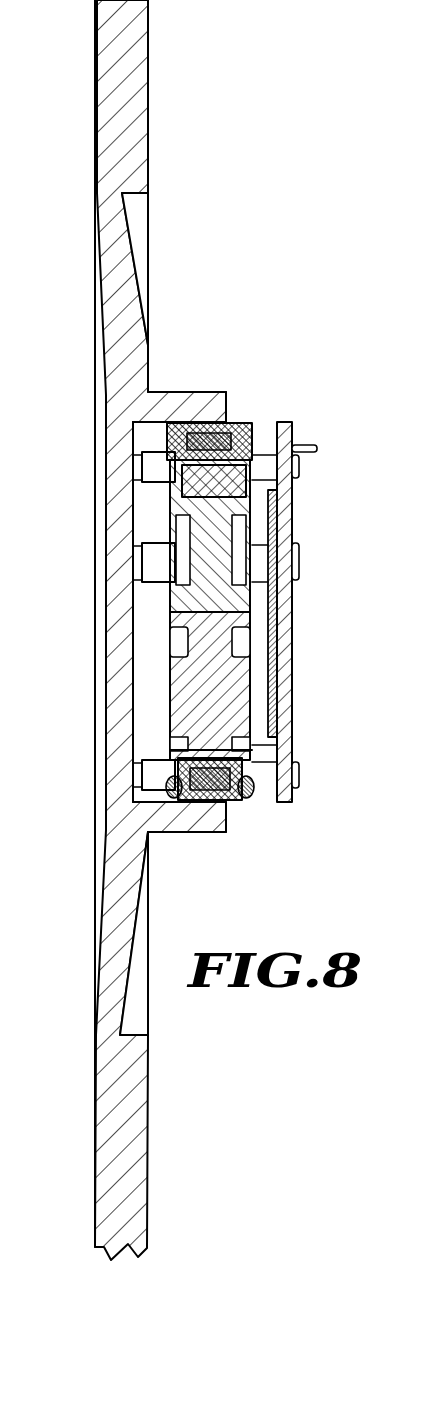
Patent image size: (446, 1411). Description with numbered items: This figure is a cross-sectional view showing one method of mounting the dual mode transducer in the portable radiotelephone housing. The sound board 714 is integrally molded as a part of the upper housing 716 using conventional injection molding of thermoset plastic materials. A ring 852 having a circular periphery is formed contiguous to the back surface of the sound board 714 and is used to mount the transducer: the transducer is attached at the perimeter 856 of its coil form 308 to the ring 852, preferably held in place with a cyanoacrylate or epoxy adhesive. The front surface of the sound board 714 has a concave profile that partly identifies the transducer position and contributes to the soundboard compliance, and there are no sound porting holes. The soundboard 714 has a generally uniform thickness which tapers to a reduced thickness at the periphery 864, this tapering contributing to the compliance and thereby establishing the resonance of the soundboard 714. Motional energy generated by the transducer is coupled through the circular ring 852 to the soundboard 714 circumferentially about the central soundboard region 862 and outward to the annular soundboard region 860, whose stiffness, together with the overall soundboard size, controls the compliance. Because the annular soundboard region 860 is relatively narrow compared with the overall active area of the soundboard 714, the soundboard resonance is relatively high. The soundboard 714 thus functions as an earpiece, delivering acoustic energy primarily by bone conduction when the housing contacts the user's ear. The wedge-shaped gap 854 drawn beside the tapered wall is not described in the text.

The sound board 714 is at (104, 698).
The upper housing 716 is at (95, 60).
The periphery 864 is at (109, 185).
The annular soundboard region 860 is at (80, 200).
The central soundboard region 862 is at (80, 398).
The wedge gap 854 is at (133, 262).
The ring 852 is at (183, 392).
The coil form 308 is at (245, 424).
The perimeter 856 is at (232, 803).